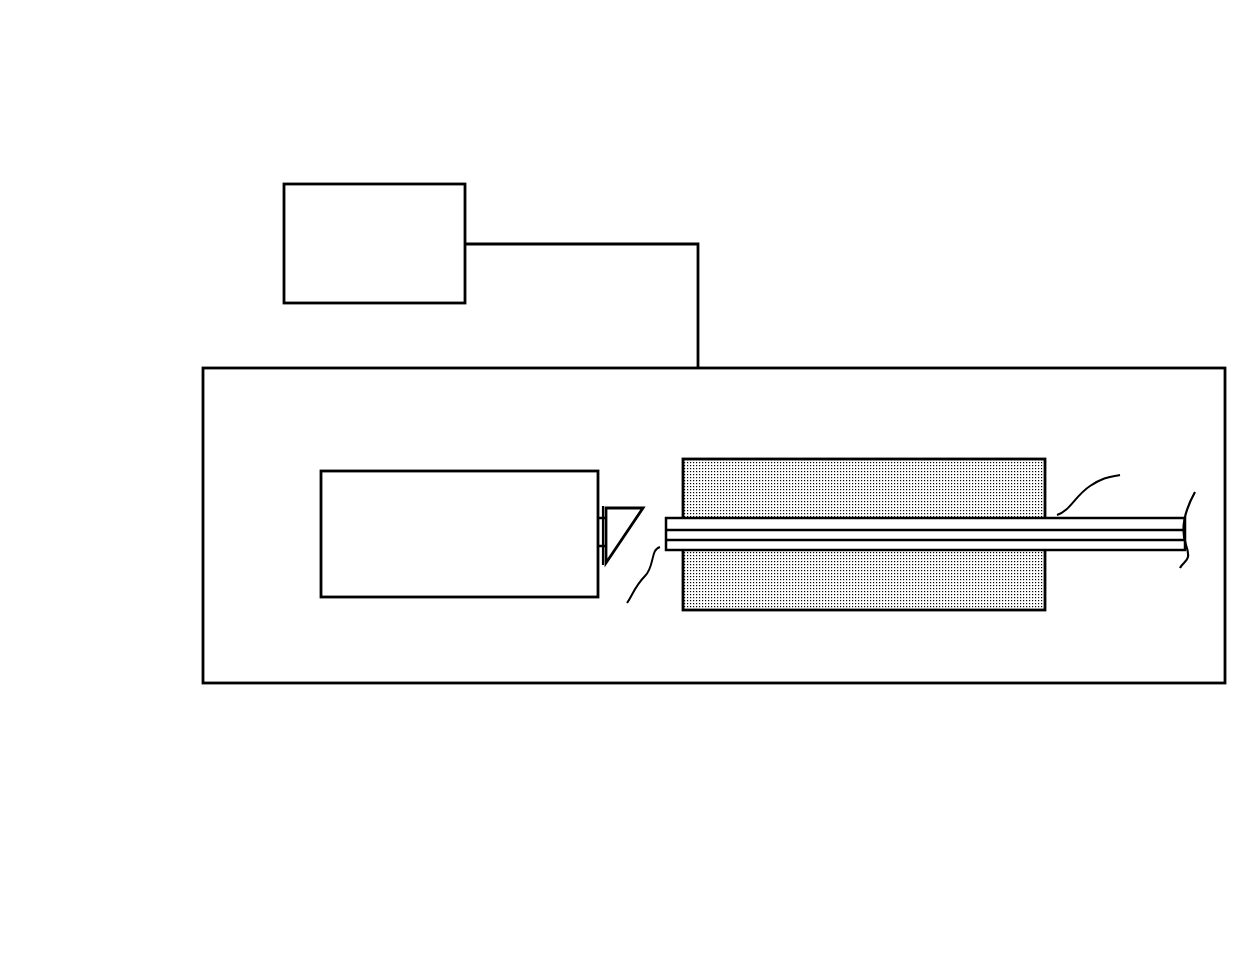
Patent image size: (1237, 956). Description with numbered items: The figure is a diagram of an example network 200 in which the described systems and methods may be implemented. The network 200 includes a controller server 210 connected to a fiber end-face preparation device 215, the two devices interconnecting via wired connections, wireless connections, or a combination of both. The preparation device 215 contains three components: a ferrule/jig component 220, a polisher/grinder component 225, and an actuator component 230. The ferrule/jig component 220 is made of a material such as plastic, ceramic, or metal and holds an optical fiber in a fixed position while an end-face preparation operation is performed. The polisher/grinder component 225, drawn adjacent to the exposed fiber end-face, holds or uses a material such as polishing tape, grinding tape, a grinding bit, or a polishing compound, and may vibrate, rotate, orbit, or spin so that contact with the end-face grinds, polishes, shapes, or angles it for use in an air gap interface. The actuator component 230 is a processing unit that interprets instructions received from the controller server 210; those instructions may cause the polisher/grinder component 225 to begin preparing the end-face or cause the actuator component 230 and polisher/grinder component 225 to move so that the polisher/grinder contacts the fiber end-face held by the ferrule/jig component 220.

The network 200 is at (272, 76).
The controller server 210 is at (356, 277).
The fiber end-face preparation device 215 is at (1007, 368).
The ferrule/jig component 220 is at (912, 459).
The polisher/grinder component 225 is at (627, 507).
The actuator component 230 is at (408, 470).